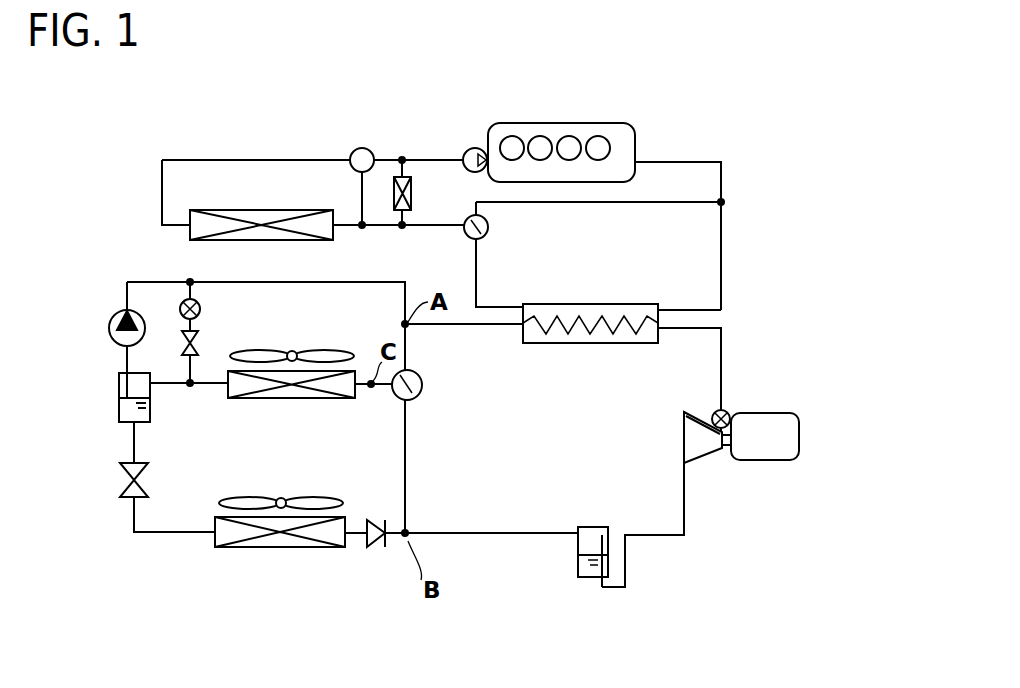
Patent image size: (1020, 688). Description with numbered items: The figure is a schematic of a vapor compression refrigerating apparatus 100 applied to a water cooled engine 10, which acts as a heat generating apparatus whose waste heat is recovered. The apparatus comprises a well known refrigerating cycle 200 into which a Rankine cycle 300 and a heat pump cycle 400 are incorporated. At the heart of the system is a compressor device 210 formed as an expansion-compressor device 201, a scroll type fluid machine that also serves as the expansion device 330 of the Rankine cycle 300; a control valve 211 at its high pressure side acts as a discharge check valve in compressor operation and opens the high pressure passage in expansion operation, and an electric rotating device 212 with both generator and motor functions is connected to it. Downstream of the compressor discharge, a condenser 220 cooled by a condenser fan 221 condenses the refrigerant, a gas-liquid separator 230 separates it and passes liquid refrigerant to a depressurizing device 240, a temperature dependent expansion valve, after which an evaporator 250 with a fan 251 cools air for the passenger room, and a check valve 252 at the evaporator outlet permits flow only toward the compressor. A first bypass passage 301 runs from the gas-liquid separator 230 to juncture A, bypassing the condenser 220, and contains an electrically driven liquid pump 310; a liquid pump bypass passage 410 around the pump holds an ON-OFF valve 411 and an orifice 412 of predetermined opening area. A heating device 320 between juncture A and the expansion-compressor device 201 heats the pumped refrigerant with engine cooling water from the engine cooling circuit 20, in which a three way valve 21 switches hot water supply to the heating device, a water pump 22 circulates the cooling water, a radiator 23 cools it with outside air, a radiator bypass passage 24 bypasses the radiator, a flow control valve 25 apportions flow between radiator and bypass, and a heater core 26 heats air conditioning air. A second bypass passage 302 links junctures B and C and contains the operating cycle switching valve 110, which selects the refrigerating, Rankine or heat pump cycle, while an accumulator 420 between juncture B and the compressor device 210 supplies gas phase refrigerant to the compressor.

The engine 10 is at (537, 123).
The engine cooling circuit 20 is at (190, 156).
The three way valve 21 is at (489, 228).
The water pump 22 is at (475, 148).
The radiator 23 is at (222, 210).
The radiator bypass passage 24 is at (361, 180).
The flow control valve 25 is at (362, 148).
The heater core 26 is at (412, 190).
The vapor compression refrigerating apparatus 100 is at (130, 271).
The operating cycle switching valve 110 is at (423, 385).
The refrigerating cycle 200 is at (728, 349).
The expansion-compressor device 201 is at (762, 411).
The compressor device 210 is at (683, 440).
The control valve 211 is at (713, 412).
The electric rotating device 212 is at (761, 462).
The condenser 220 is at (291, 399).
The condenser fan 221 is at (313, 350).
The gas-liquid separator 230 is at (118, 399).
The depressurizing device 240 is at (119, 480).
The evaporator 250 is at (272, 548).
The fan 251 is at (253, 497).
The check valve 252 is at (383, 548).
The Rankine cycle 300 is at (367, 281).
The first bypass passage 301 is at (268, 282).
The second bypass passage 302 is at (407, 463).
The liquid pump 310 is at (109, 326).
The heating device 320 is at (590, 344).
The expansion device 330 is at (667, 440).
The heat pump cycle 400 is at (462, 324).
The liquid pump bypass passage 410 is at (201, 302).
The ON-OFF valve 411 is at (184, 323).
The orifice 412 is at (200, 342).
The accumulator 420 is at (577, 556).